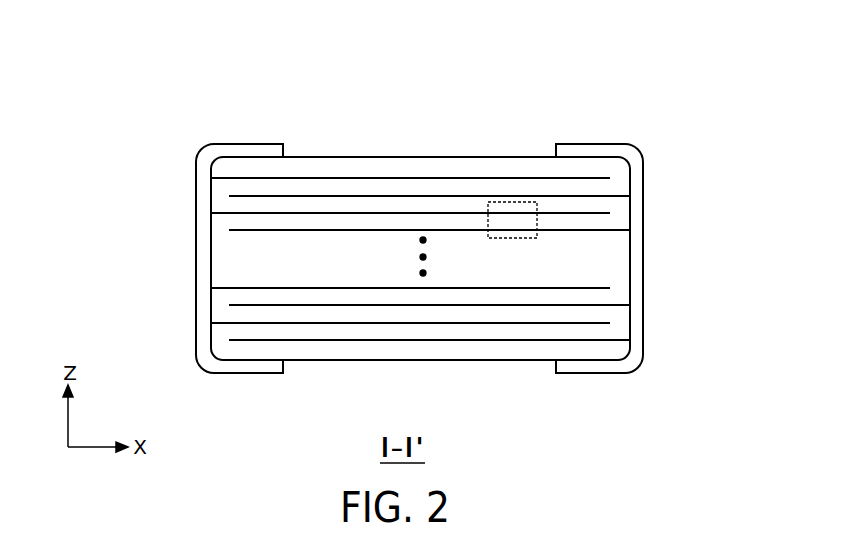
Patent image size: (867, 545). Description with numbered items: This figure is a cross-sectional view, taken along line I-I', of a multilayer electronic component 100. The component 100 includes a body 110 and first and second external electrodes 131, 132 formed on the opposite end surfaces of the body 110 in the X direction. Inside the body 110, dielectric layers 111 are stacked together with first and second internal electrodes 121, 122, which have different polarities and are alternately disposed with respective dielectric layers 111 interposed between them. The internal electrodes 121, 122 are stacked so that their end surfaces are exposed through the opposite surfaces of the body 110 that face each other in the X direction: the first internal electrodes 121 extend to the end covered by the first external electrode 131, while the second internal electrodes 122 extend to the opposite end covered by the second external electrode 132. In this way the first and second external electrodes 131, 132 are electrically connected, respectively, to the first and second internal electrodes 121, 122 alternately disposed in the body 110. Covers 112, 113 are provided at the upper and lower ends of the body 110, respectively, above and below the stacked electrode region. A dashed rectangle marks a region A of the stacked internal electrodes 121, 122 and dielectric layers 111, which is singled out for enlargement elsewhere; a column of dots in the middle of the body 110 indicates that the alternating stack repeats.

The multilayer electronic component 100 is at (444, 57).
The body 110 is at (417, 157).
The dielectric layers 111 is at (622, 220).
The cover 112 is at (336, 157).
The cover 113 is at (442, 350).
The first internal electrode 121 is at (228, 211).
The second internal electrode 122 is at (593, 236).
The first external electrode 131 is at (266, 144).
The second external electrode 132 is at (590, 144).
The enlarged region A is at (510, 202).